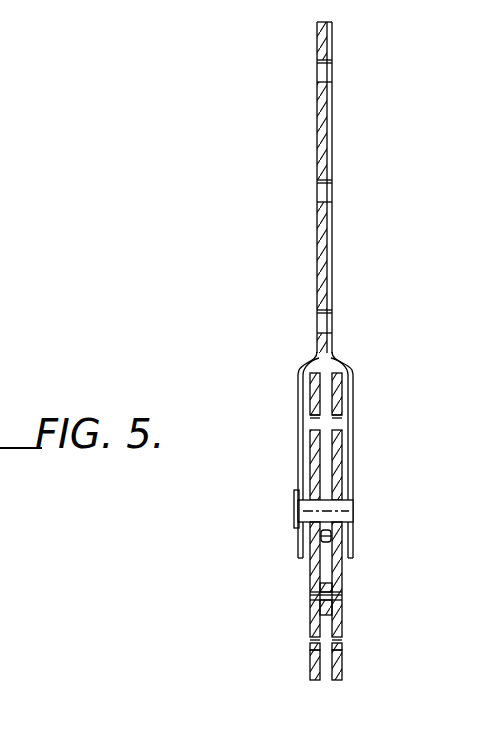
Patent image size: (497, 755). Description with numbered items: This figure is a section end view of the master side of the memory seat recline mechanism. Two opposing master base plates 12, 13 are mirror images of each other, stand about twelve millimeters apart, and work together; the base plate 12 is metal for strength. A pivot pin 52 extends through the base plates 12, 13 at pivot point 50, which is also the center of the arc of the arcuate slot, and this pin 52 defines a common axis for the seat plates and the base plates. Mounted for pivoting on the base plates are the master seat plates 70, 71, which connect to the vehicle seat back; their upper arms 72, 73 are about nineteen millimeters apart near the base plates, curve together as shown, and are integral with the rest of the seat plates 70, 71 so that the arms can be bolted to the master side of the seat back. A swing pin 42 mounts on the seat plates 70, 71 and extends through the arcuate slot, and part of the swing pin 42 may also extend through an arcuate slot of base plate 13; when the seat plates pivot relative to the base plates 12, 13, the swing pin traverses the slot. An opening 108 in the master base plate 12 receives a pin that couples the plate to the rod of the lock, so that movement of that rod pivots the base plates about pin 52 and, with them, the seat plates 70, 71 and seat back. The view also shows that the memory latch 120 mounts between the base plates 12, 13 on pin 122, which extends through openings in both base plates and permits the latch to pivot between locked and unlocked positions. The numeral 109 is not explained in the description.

The master base plate 12 is at (310, 668).
The opposing base plate 13 is at (342, 668).
The swing pin 42 is at (294, 505).
The pivot point 50 is at (320, 416).
The pivot pin 52 is at (299, 429).
The master seat plate 70 is at (312, 364).
The master seat plate 71 is at (340, 364).
The upper arm 72 is at (315, 239).
The upper arm 73 is at (333, 240).
The opening 108 is at (311, 643).
The second leg 109 is at (342, 640).
The memory latch 120 is at (331, 540).
The pin 122 is at (320, 598).